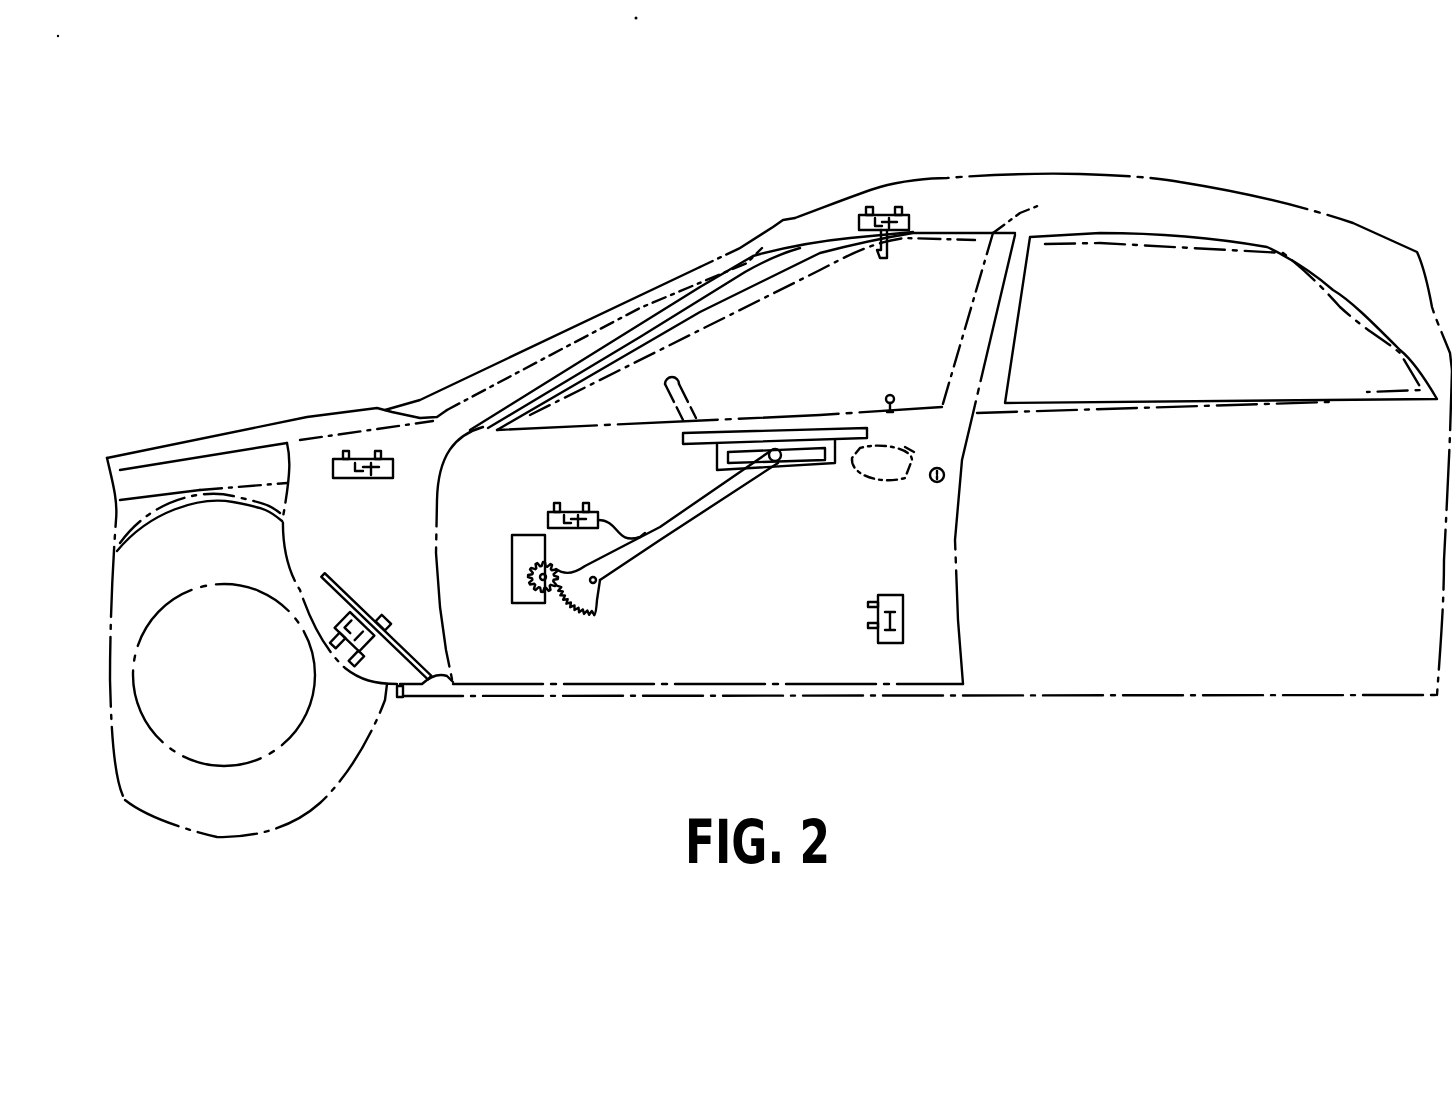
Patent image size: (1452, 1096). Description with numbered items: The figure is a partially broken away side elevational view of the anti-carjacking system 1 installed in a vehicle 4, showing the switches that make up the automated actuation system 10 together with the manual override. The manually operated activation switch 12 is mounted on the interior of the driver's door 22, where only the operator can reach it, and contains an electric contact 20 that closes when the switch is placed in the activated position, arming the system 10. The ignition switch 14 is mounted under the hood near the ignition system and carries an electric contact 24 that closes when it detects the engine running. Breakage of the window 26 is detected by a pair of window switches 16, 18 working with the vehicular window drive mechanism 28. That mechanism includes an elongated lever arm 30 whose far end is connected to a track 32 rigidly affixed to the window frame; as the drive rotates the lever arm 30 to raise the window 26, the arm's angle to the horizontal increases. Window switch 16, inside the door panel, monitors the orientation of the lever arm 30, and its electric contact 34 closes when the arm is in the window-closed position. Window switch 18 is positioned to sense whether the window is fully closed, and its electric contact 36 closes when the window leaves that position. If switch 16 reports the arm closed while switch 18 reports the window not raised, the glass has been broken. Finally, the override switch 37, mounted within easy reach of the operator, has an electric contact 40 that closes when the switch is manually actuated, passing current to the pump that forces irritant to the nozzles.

The anti-carjacking system 1 is at (548, 231).
The vehicle 4 is at (1233, 187).
The automated actuation system 10 is at (578, 726).
The manually operated activation switch 12 is at (907, 622).
The ignition switch 14 is at (334, 455).
The window switch 16 is at (552, 514).
The window switch 18 is at (910, 220).
The electric contact 20 is at (937, 655).
The driver's door 22 is at (957, 522).
The electric contact 24 is at (333, 480).
The window 26 is at (1005, 228).
The vehicular window drive mechanism 28 is at (527, 605).
The lever arm 30 is at (673, 533).
The track 32 is at (803, 467).
The electric contact 34 is at (548, 518).
The electric contact 36 is at (914, 192).
The override switch 37 is at (372, 689).
The electric contact 40 is at (383, 653).